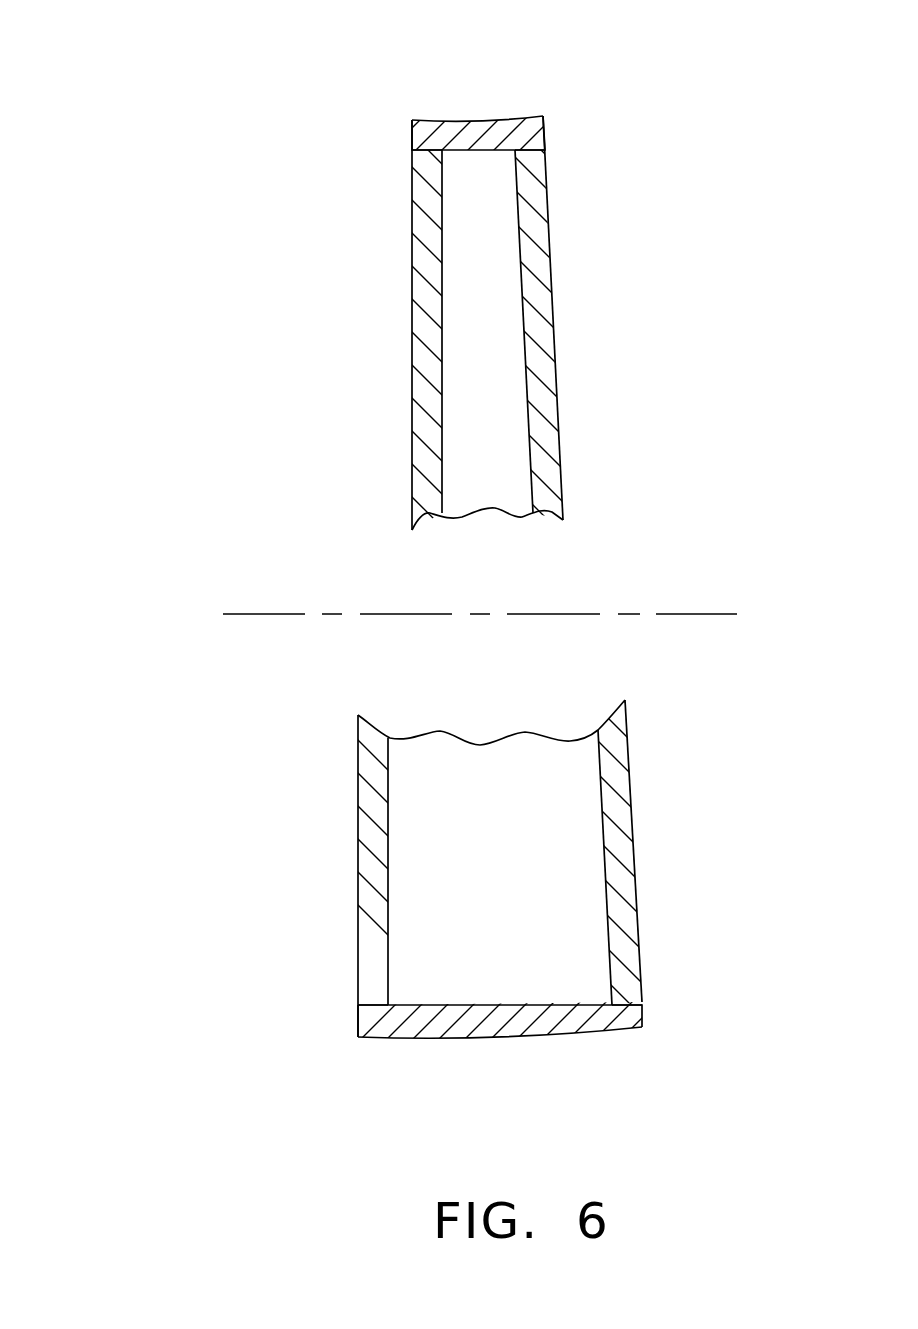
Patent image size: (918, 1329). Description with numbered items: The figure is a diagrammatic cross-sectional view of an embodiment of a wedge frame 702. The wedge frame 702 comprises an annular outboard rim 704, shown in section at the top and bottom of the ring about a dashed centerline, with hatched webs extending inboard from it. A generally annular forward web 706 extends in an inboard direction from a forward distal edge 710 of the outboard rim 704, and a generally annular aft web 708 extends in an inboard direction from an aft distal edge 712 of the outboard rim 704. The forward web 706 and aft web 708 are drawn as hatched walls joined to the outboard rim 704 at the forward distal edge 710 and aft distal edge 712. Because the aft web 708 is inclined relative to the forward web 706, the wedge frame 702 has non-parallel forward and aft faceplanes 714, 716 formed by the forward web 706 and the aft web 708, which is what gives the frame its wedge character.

The wedge frame 702 is at (250, 490).
The annular outboard rim 704 is at (497, 118).
The forward web 706 is at (424, 260).
The aft web 708 is at (540, 322).
The forward distal edge 710 is at (412, 130).
The aft distal edge 712 is at (545, 143).
The forward faceplane 714 is at (372, 403).
The aft faceplane 716 is at (622, 420).